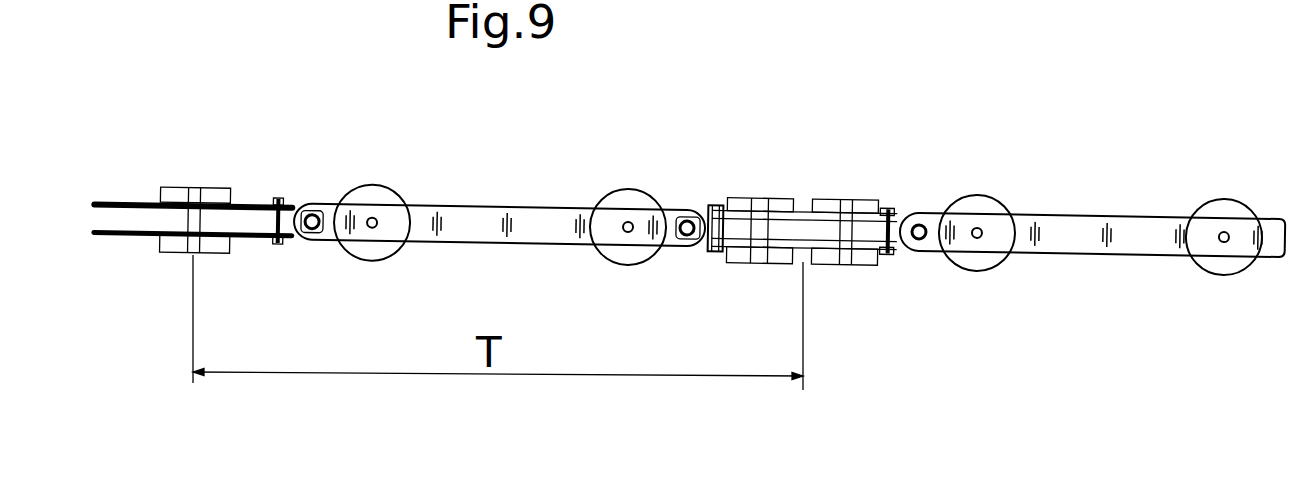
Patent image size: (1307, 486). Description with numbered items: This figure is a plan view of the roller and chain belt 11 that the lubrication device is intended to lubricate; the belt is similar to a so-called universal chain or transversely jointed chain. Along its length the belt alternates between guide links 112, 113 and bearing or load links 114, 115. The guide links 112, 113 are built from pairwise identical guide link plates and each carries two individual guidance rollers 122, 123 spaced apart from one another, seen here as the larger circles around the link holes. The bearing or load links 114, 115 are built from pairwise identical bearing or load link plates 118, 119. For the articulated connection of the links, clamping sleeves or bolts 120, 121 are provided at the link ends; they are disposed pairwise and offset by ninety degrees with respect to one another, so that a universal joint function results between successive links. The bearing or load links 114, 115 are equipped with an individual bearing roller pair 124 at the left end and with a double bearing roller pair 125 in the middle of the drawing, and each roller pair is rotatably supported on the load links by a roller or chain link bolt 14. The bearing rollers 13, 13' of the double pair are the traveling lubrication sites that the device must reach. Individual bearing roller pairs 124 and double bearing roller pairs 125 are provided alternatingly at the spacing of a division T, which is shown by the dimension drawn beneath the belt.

The roller and chain belt 11 is at (1134, 161).
The guide link 112 is at (493, 194).
The guide link 113 is at (1043, 203).
The bearing or load link 114 is at (252, 192).
The bearing or load link 115 is at (805, 195).
The bearing or load link plate 118 is at (812, 203).
The bearing or load link plate 119 is at (782, 196).
The clamping sleeve or bolt 120 is at (675, 247).
The clamping sleeve or bolt 121 is at (713, 205).
The guidance roller 122 is at (383, 197).
The guidance roller 123 is at (640, 195).
The individual bearing roller pair 124 is at (179, 180).
The double bearing roller pair 125 is at (784, 285).
The bearing roller 13 is at (862, 263).
The bearing roller 13' is at (740, 267).
The roller or chain link bolt 14 is at (843, 235).